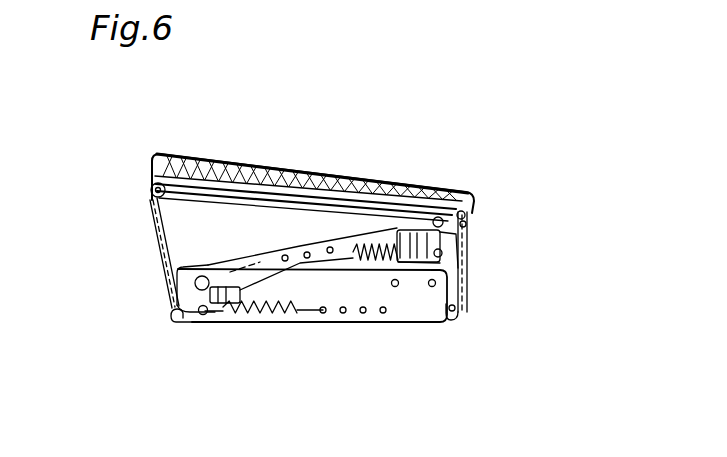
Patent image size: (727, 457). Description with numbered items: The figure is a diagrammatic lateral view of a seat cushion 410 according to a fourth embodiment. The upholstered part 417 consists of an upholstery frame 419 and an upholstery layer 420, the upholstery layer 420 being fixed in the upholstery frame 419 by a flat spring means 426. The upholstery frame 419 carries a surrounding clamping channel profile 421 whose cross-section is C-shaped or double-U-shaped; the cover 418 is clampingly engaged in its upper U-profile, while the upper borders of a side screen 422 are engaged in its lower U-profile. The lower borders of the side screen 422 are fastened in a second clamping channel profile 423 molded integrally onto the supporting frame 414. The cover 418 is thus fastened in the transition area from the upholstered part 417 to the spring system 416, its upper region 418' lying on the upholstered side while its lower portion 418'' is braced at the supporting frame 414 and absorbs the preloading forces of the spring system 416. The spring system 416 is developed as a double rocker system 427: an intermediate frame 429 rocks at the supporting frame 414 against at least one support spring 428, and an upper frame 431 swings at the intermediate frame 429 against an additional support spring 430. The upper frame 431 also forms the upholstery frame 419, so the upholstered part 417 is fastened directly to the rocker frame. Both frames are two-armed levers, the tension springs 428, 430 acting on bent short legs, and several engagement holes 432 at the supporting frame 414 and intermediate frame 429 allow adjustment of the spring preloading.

The adjusting device 410 is at (279, 148).
The supporting frame 414 is at (337, 302).
The spring system 416 is at (175, 269).
The upholstered part 417 is at (392, 176).
The cover 418 is at (306, 161).
The front strap 418' is at (122, 240).
The lower portion of the cover 418'' is at (112, 308).
The upholstery frame 419 is at (272, 224).
The upholstery layer 420 is at (230, 160).
The clamping channel profile 421 is at (463, 222).
The side screen 422 is at (465, 258).
The second clamping channel profile 423 is at (452, 318).
The flat spring means 426 is at (203, 160).
The double rocker system 427 is at (336, 226).
The support spring 428 is at (238, 320).
The intermediate frame 429 is at (297, 262).
The additional support spring 430 is at (443, 268).
The upper frame 431 is at (420, 188).
The engagement holes 432 is at (332, 246).